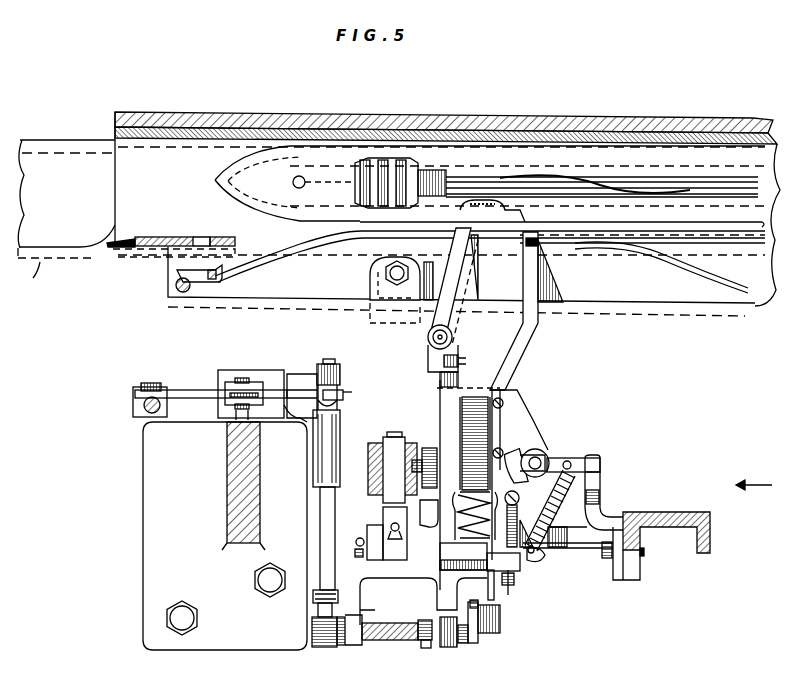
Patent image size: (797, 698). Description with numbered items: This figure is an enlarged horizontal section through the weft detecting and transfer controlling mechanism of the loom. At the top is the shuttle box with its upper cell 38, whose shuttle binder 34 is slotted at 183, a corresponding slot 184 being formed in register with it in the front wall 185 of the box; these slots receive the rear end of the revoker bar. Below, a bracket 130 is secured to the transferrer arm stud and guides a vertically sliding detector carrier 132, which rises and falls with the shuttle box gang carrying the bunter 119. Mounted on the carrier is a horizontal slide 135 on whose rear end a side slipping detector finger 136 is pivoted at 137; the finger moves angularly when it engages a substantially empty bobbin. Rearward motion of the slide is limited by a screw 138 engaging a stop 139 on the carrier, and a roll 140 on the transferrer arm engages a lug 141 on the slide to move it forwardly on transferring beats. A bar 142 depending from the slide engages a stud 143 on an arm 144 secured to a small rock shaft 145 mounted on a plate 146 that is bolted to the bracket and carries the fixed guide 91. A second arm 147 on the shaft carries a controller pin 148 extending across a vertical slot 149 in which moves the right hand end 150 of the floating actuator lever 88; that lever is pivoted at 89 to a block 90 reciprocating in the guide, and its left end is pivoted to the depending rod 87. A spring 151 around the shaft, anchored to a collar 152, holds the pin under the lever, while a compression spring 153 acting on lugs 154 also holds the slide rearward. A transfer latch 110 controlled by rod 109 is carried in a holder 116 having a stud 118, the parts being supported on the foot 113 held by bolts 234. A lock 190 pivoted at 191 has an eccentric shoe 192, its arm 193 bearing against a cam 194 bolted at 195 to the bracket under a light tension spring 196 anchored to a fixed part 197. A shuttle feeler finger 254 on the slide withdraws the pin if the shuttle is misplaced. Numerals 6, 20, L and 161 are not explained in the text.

The section arrow 6 is at (754, 478).
The barrel 20 is at (46, 152).
The length L is at (32, 273).
The shuttle binder 34 is at (295, 252).
The upper cell 38 is at (207, 150).
The depending rod 87 is at (136, 405).
The floating actuator lever 88 is at (192, 391).
The pivot 89 is at (239, 382).
The block 90 is at (252, 385).
The fixed guide 91 is at (270, 375).
The rod 109 is at (358, 536).
The transfer latch 110 is at (398, 429).
The foot 113 is at (148, 535).
The holder 116 is at (372, 468).
The stud 118 is at (355, 548).
The bunter 119 is at (383, 305).
The bracket 130 is at (690, 514).
The detector carrier 132 is at (438, 390).
The horizontal slide 135 is at (452, 410).
The side slipping detector finger 136 is at (460, 268).
The pivot 137 is at (430, 339).
The screw 138 is at (514, 584).
The stop 139 is at (519, 496).
The roll 140 is at (429, 448).
The lug 141 is at (435, 513).
The bar 142 is at (498, 598).
The stud 143 is at (486, 620).
The arm 144 is at (482, 633).
The rock shaft 145 is at (470, 643).
The plate 146 is at (422, 580).
The second arm 147 is at (325, 647).
The controller pin 148 is at (322, 520).
The vertical slot 149 is at (340, 385).
The right hand end 150 is at (305, 410).
The spring 151 is at (392, 641).
The collar 152 is at (426, 648).
The compression spring 153 is at (452, 520).
The lugs 154 is at (468, 392).
The collar 161 is at (344, 397).
The slot 183 is at (210, 282).
The slot 184 is at (203, 238).
The front wall 185 is at (143, 247).
The lock 190 is at (538, 455).
The pivot 191 is at (572, 458).
The shoe 192 is at (520, 460).
The arm 193 is at (590, 457).
The cam 194 is at (600, 492).
The bolt 195 is at (606, 560).
The tension spring 196 is at (549, 516).
The fixed part 197 is at (537, 562).
The bolts 234 is at (265, 580).
The shuttle feeler finger 254 is at (530, 347).